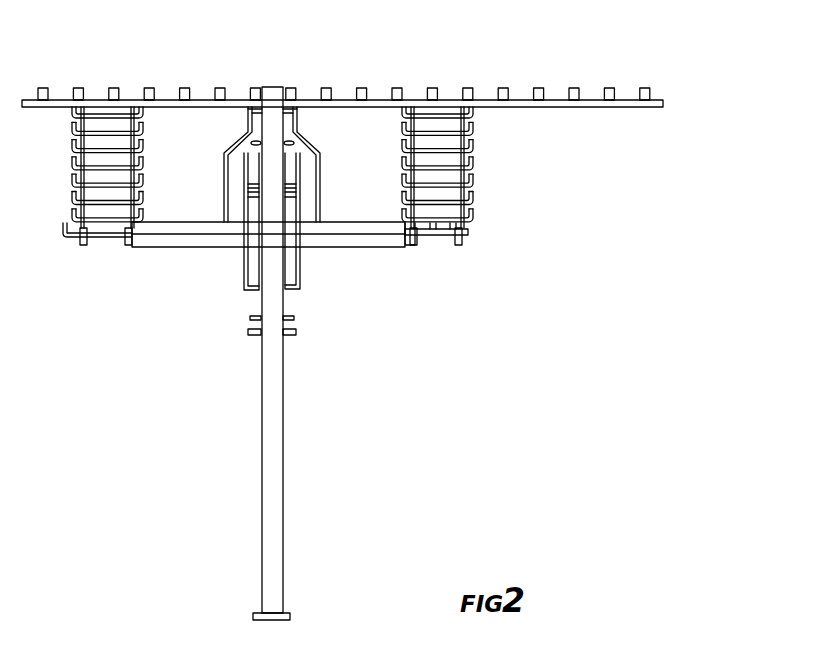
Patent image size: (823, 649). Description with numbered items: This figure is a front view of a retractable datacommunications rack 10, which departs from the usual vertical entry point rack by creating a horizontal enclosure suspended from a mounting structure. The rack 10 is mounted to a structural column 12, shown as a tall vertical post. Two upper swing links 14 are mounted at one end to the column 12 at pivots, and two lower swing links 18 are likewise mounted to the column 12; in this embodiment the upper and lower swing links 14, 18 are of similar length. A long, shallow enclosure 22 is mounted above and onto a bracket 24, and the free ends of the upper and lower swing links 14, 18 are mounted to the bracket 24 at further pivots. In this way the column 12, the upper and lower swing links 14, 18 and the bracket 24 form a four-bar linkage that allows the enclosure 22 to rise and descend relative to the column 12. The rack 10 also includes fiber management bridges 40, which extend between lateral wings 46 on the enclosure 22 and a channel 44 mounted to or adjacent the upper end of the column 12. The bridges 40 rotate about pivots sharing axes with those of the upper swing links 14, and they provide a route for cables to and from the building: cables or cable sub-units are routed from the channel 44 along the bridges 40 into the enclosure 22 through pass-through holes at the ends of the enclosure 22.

The retractable datacommunications rack 10 is at (724, 167).
The structural column 12 is at (275, 495).
The upper swing links 14 is at (316, 137).
The lower swing links 18 is at (300, 199).
The enclosure 22 is at (367, 225).
The bracket 24 is at (287, 288).
The fiber management bridges 40 is at (72, 162).
The channel 44 is at (548, 100).
The lateral wings 46 is at (443, 240).